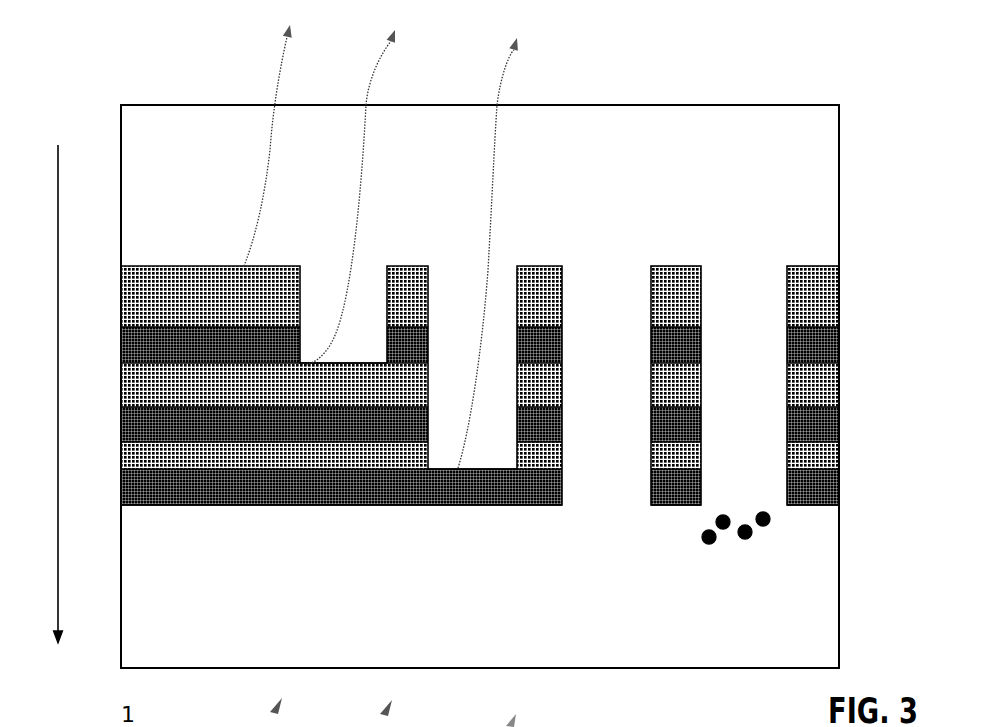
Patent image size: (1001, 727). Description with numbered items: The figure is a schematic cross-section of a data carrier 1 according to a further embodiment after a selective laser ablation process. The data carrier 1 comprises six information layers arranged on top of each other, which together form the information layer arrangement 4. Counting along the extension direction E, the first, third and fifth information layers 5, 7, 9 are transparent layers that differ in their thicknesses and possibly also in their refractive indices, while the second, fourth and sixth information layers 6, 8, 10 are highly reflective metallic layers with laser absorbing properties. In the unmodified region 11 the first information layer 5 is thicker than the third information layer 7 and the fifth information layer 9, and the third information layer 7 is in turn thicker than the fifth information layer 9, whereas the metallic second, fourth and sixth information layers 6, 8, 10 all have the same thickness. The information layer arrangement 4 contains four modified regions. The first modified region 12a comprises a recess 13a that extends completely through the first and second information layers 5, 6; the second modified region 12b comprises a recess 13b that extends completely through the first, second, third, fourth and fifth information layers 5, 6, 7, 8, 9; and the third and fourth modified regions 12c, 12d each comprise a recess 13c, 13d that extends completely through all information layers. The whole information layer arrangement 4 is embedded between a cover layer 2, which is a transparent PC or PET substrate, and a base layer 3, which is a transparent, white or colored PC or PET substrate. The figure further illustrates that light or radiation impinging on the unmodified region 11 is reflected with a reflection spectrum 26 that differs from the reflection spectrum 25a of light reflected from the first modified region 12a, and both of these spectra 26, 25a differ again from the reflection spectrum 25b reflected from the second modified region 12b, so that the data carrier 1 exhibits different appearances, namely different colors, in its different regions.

The data carrier 1 is at (168, 82).
The cover layer 2 is at (828, 130).
The base layer 3 is at (826, 600).
The information layer arrangement 4 is at (477, 385).
The first information layer 5 is at (132, 301).
The second information layer 6 is at (130, 347).
The third information layer 7 is at (132, 389).
The fourth information layer 8 is at (132, 431).
The fifth information layer 9 is at (132, 461).
The sixth information layer 10 is at (132, 494).
The unmodified region 11 is at (223, 251).
The first modified region 12a is at (326, 279).
The recess 13a is at (323, 254).
The second modified region 12b is at (464, 269).
The recess 13b is at (450, 332).
The third modified region 12c is at (604, 256).
The recess 13c is at (600, 350).
The fourth modified region 12d is at (746, 254).
The recess 13d is at (737, 369).
The reflection spectrum 25a is at (362, 135).
The reflection spectrum 25b is at (495, 134).
The reflection spectrum 26 is at (268, 130).
The extension direction E is at (58, 228).